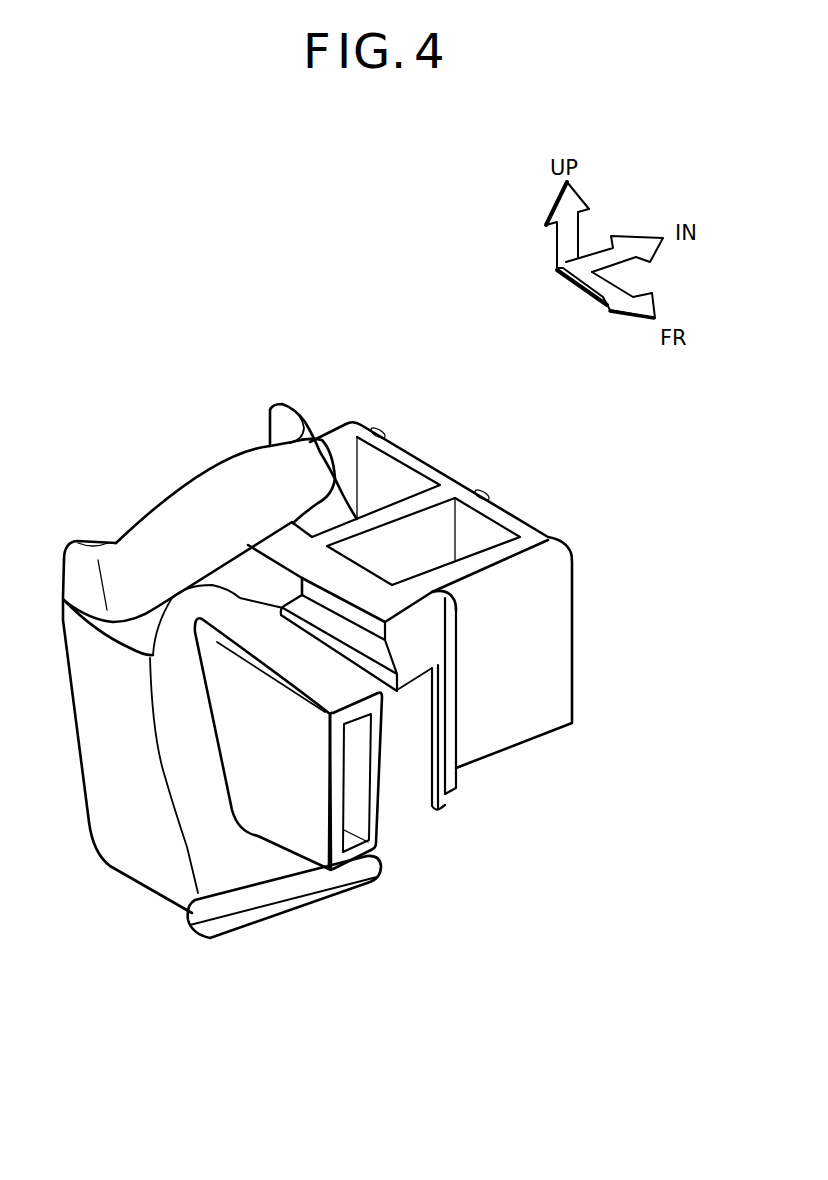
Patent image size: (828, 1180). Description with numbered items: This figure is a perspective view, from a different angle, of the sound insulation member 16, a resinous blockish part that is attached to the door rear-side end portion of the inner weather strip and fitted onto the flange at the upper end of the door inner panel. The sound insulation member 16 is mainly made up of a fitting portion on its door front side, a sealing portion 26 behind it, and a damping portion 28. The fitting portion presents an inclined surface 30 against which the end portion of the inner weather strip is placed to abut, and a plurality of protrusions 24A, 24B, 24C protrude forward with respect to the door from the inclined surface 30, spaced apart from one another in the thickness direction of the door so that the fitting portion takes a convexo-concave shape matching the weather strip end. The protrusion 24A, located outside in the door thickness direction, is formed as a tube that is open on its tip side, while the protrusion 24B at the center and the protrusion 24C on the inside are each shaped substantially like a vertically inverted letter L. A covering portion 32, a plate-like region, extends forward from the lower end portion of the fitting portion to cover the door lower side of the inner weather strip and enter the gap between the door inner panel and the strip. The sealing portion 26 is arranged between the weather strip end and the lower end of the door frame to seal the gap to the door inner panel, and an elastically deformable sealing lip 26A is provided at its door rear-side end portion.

The sound insulation member 16 is at (386, 384).
The protrusion 24A is at (374, 882).
The protrusion 24B is at (438, 810).
The protrusion 24C is at (458, 722).
The sealing portion 26 is at (246, 449).
The sealing lip 26A is at (180, 491).
The damping portion 28 is at (443, 473).
The inclined surface 30 is at (183, 800).
The covering portion 32 is at (305, 912).